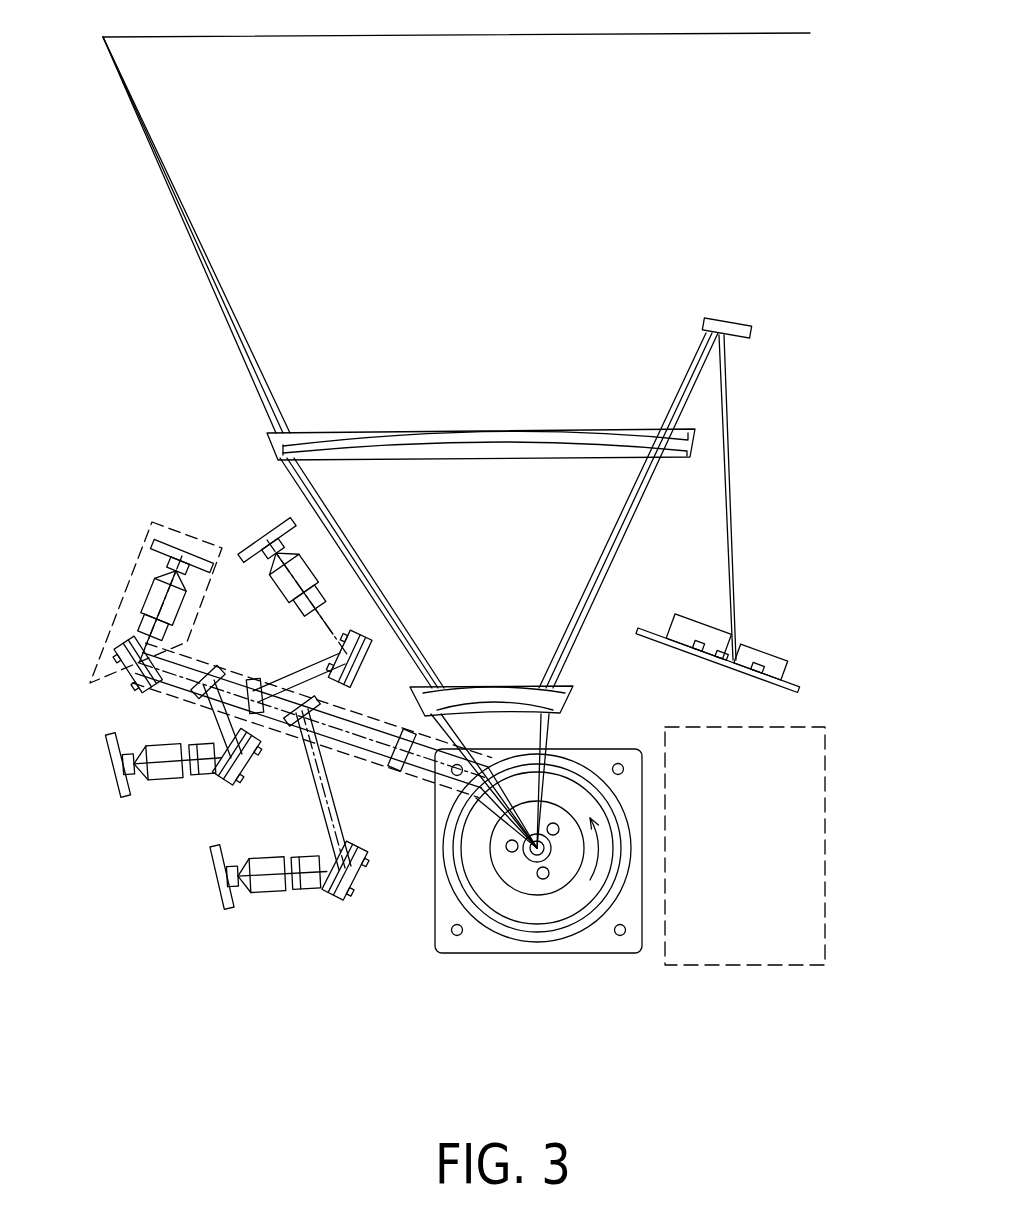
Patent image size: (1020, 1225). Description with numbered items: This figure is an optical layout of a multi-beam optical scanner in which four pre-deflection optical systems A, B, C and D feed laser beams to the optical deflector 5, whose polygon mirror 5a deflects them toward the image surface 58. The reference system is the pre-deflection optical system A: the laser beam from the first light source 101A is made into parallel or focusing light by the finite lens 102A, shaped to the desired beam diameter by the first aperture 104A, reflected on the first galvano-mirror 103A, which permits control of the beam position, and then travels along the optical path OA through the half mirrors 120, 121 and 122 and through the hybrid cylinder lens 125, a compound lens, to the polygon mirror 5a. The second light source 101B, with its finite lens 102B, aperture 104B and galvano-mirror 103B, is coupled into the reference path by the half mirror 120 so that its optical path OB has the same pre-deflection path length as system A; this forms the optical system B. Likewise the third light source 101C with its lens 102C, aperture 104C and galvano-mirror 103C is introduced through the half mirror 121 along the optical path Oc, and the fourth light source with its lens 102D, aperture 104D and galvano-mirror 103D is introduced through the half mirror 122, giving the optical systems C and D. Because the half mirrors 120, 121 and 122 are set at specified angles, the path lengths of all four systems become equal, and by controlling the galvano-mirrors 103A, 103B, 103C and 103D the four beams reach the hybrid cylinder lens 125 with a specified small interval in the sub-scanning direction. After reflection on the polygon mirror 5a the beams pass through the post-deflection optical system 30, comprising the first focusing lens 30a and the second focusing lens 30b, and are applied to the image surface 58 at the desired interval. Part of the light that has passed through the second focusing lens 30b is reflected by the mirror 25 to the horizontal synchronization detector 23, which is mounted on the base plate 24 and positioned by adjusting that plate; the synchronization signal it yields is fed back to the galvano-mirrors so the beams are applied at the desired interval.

The image surface 58 is at (456, 22).
The mirror 25 is at (712, 316).
The post-deflection optical system 30 is at (645, 563).
The first focusing lens 30a is at (578, 690).
The second focusing lens 30b is at (690, 460).
The horizontal synchronization detector 23 is at (718, 664).
The base plate 24 is at (775, 684).
The optical deflector 5 is at (490, 942).
The polygon mirror 5a is at (547, 912).
The pre-deflection optical system A is at (130, 580).
The pre-deflection optical system B is at (140, 792).
The pre-deflection optical system C is at (365, 599).
The pre-deflection optical system D is at (252, 917).
The first light source 101A is at (182, 540).
The finite lens 102A is at (160, 586).
The first galvano-mirror 103A is at (112, 672).
The first aperture 104A is at (146, 620).
The second light source 101B is at (116, 796).
The finite lens 102B is at (160, 778).
The galvano-mirror 103B is at (230, 785).
The aperture 104B is at (196, 781).
The third light source 101C is at (246, 548).
The finite lens 102C is at (300, 572).
The galvano-mirror 103C is at (375, 665).
The aperture 104C is at (305, 604).
The finite lens 102D is at (262, 898).
The galvano-mirror 103D is at (346, 895).
The aperture 104D is at (305, 895).
The half mirror 120 is at (212, 672).
The half mirror 121 is at (260, 684).
The half mirror 122 is at (320, 710).
The hybrid cylinder lens 125 is at (397, 767).
The optical path OA is at (158, 700).
The optical path OB is at (214, 712).
The optical path OC Oc is at (326, 624).